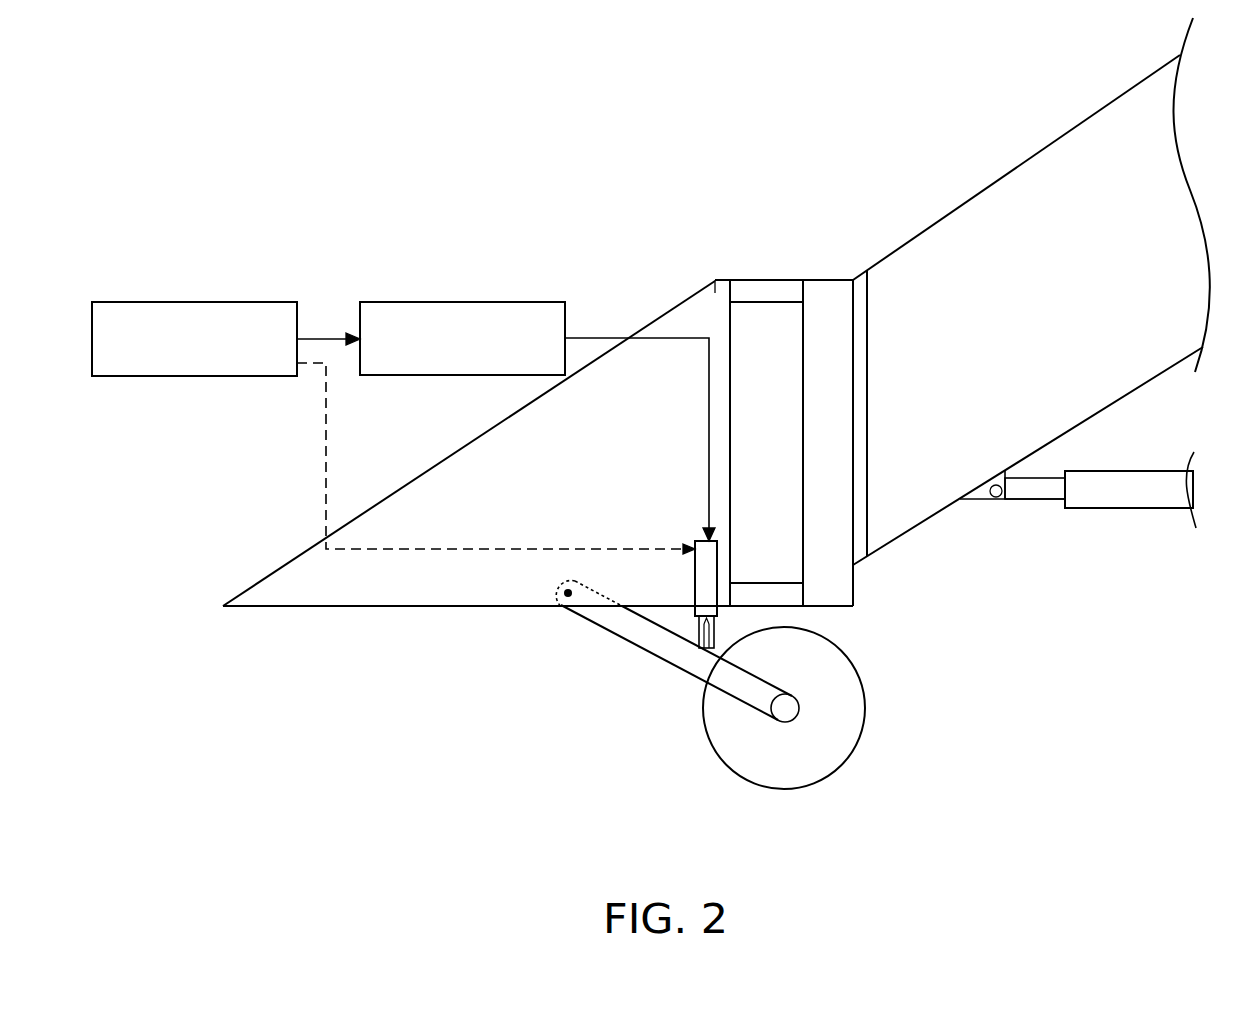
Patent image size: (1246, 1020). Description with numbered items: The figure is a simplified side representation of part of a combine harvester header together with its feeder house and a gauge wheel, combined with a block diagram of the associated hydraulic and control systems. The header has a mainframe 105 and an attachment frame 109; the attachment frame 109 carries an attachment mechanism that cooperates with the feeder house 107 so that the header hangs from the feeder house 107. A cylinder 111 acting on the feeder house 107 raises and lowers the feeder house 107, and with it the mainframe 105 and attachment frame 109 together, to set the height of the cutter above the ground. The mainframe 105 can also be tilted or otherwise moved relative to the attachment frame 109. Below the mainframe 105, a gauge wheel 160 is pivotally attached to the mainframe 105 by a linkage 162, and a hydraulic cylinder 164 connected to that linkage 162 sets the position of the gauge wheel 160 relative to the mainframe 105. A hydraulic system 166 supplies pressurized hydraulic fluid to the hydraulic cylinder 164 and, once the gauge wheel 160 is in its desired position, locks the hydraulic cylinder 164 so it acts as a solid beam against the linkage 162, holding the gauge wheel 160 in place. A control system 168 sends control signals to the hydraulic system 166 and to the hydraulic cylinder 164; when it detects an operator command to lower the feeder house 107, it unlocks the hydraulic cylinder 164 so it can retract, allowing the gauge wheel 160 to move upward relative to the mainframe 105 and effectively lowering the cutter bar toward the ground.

The mainframe 105 is at (716, 292).
The feeder house 107 is at (1050, 143).
The attachment frame 109 is at (830, 280).
The cylinder 111 is at (1117, 508).
The gauge wheel 160 is at (845, 758).
The linkage 162 is at (647, 652).
The hydraulic cylinder 164 is at (693, 577).
The hydraulic system 166 is at (537, 421).
The control system 168 is at (393, 428).